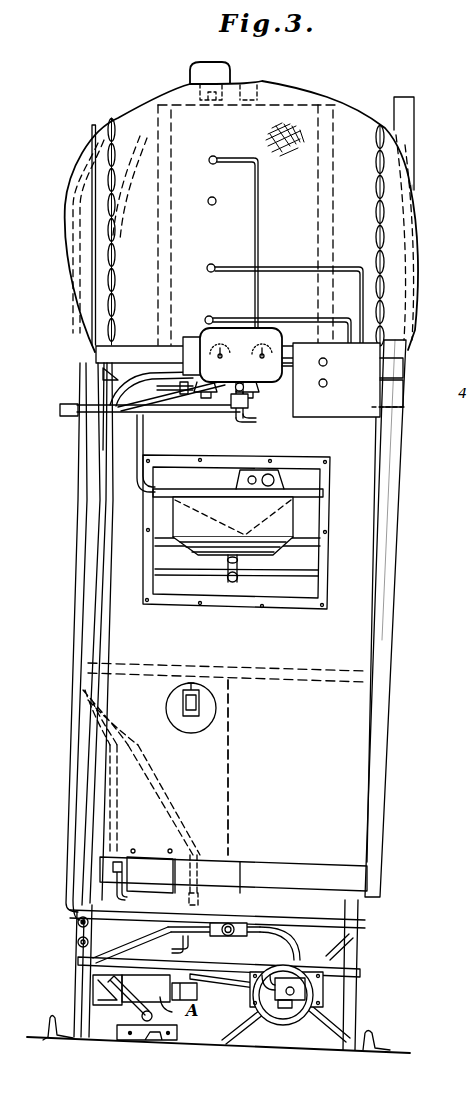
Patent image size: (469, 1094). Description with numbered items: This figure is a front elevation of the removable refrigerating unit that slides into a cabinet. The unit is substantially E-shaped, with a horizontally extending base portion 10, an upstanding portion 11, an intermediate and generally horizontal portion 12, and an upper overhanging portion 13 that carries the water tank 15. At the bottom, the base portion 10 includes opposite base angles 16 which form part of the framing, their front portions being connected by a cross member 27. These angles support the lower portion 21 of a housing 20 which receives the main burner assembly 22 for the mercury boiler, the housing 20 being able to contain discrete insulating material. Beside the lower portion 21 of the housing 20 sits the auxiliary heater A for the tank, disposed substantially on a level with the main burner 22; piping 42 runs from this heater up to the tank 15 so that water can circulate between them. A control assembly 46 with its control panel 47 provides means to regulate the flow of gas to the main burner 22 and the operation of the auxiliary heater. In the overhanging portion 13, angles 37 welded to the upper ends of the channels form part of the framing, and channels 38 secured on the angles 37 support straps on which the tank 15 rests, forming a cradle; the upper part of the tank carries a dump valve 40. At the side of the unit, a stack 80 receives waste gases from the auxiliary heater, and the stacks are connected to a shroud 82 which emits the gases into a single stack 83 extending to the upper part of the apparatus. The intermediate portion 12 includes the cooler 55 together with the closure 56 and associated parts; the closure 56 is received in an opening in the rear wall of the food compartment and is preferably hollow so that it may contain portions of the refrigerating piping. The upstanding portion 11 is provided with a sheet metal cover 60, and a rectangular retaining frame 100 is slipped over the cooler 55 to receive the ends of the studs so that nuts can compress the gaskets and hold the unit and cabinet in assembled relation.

The base portion 10 is at (370, 913).
The upstanding portion 11 is at (358, 654).
The intermediate horizontally disposed portion 12 is at (236, 533).
The upper overhanging portion 13 is at (416, 195).
The water tank 15 is at (296, 102).
The base angles 16 is at (52, 1036).
The housing 20 is at (355, 827).
The lower portion of housing 21 is at (342, 958).
The main burner assembly 22 is at (305, 992).
The cross member 27 is at (80, 964).
The angles 37 is at (403, 409).
The channels 38 is at (130, 352).
The dump valve 40 is at (190, 75).
The piping 42 is at (170, 818).
The control assembly 46 is at (250, 408).
The control panel 47 is at (200, 336).
The cooler 55 is at (213, 497).
The closure 56 is at (284, 598).
The sheet metal cover 60 is at (358, 548).
The stack 80 is at (386, 752).
The shroud 82 is at (397, 376).
The single stack 83 is at (410, 110).
The retaining frame 100 is at (172, 606).